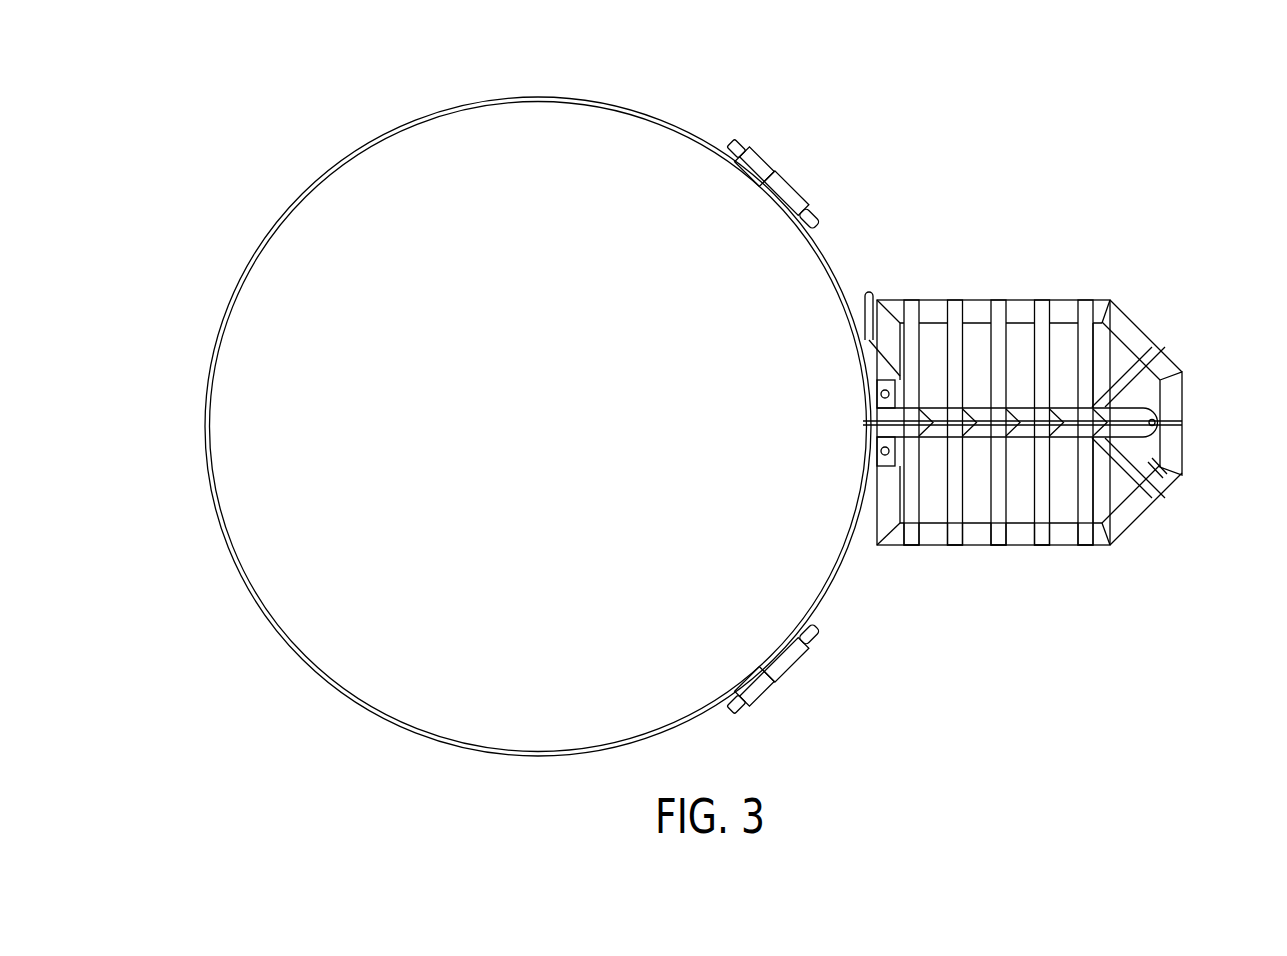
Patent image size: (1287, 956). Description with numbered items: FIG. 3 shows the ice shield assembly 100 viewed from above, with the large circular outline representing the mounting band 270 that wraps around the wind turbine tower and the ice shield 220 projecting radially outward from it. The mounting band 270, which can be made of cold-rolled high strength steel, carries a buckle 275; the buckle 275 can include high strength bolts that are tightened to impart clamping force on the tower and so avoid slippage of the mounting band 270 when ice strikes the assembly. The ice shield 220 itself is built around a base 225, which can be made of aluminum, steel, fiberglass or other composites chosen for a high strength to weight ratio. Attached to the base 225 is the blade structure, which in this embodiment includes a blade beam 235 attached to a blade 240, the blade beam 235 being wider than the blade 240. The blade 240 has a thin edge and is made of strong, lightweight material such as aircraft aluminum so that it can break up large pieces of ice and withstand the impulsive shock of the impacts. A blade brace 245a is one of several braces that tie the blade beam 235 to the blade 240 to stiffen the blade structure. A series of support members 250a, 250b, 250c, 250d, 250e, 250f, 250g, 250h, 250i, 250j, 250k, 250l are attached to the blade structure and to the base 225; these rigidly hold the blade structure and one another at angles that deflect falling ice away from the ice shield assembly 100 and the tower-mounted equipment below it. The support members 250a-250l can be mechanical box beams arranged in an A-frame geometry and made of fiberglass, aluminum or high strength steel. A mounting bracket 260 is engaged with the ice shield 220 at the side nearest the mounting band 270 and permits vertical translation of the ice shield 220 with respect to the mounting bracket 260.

The ice shield assembly 100 is at (703, 444).
The mounting band 270 is at (265, 238).
The buckle 275 is at (806, 203).
The ice shield 220 is at (1053, 369).
The support member 250a is at (1152, 352).
The support member 250b is at (1088, 312).
The support member 250c is at (1043, 312).
The support member 250d is at (997, 312).
The support member 250e is at (958, 312).
The support member 250f is at (912, 312).
The support member 250g is at (912, 535).
The support member 250h is at (955, 535).
The support member 250i is at (997, 535).
The support member 250j is at (1043, 535).
The support member 250k is at (1087, 535).
The support member 250l is at (1152, 498).
The blade beam 235 is at (1182, 378).
The blade 240 is at (1182, 423).
The blade brace 245a is at (1156, 425).
The base 225 is at (1152, 463).
The mounting bracket 260 is at (897, 472).